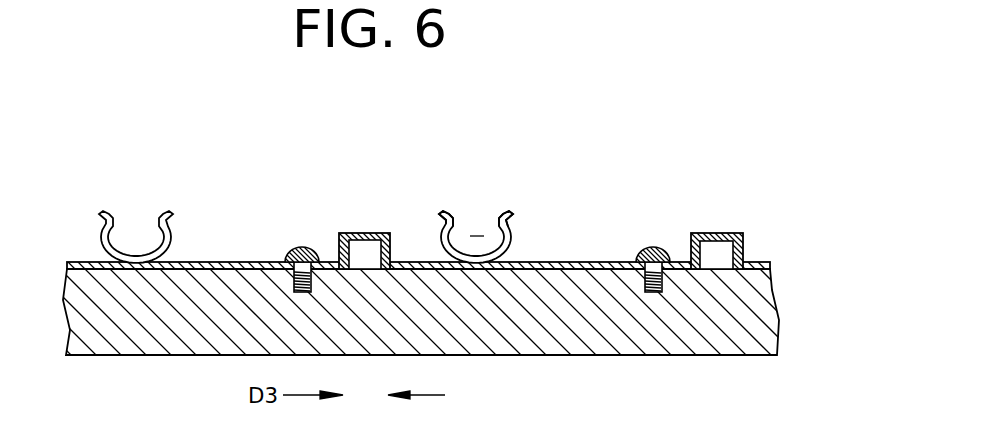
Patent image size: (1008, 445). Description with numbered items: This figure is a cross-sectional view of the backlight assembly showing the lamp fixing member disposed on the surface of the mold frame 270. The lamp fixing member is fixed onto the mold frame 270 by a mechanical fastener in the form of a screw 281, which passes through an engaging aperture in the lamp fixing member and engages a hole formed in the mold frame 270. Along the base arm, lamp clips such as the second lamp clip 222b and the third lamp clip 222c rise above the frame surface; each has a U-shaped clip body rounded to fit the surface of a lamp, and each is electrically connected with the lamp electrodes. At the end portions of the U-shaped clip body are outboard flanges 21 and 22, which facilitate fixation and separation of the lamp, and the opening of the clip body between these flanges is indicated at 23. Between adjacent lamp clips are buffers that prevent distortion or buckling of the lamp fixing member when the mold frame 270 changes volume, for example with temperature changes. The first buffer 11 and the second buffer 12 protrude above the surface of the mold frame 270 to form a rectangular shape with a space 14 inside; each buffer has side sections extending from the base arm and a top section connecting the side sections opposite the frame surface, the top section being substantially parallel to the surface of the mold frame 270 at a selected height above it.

The first buffer 11 is at (736, 202).
The second buffer 12 is at (367, 233).
The space 14 is at (724, 258).
The outboard flange 21 is at (501, 212).
The outboard flange 22 is at (447, 212).
The hook opening 23 is at (478, 236).
The second lamp clip 222b is at (513, 245).
The third lamp clip 222c is at (171, 242).
The mold frame 270 is at (763, 318).
The screw 281 is at (304, 246).